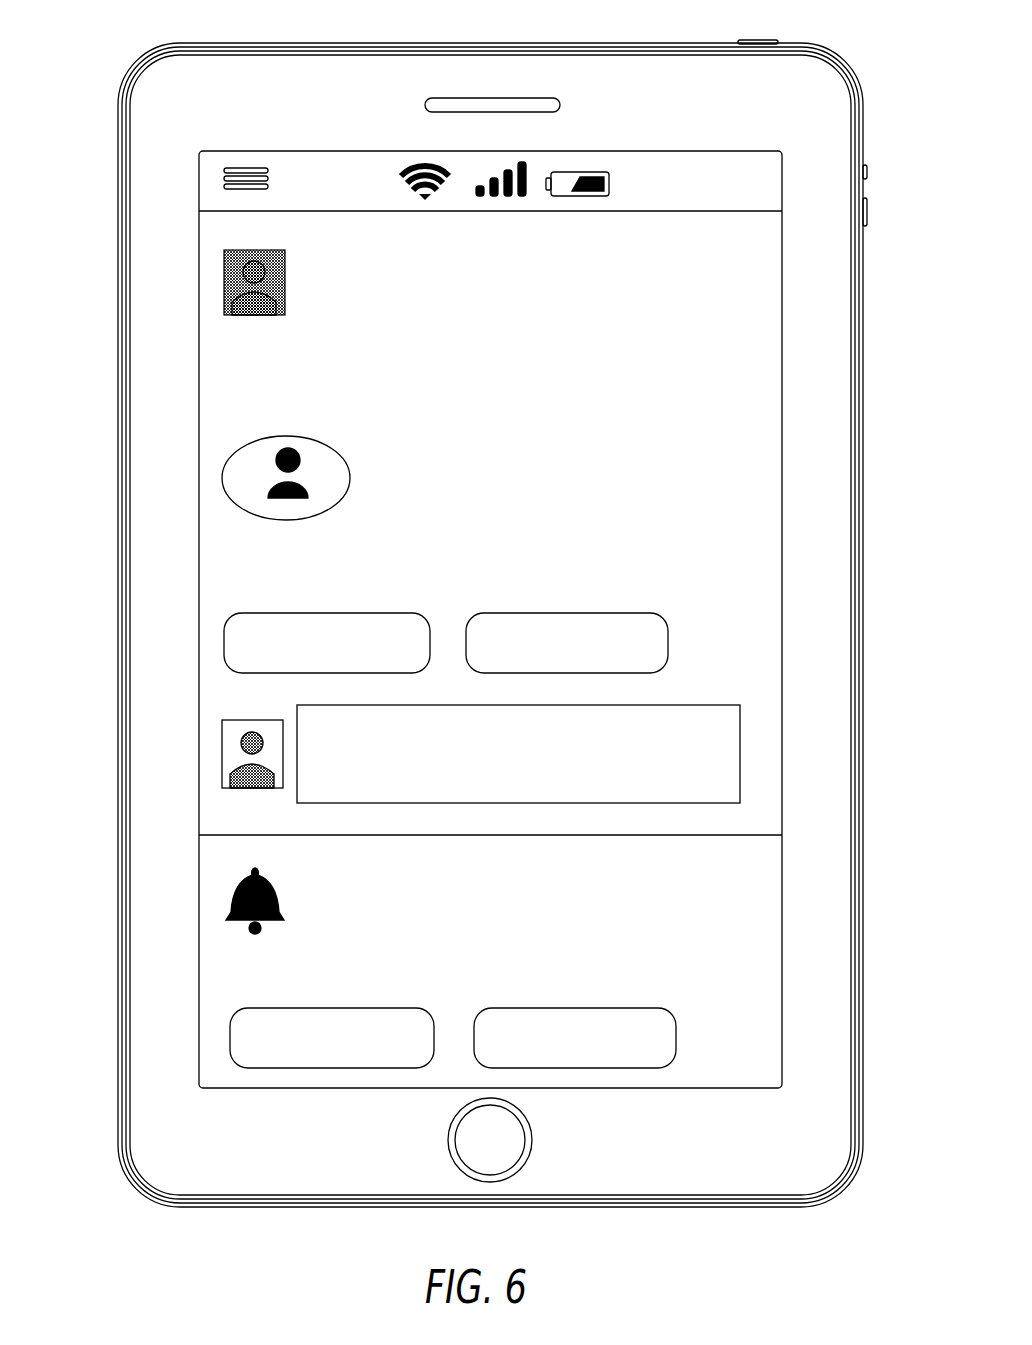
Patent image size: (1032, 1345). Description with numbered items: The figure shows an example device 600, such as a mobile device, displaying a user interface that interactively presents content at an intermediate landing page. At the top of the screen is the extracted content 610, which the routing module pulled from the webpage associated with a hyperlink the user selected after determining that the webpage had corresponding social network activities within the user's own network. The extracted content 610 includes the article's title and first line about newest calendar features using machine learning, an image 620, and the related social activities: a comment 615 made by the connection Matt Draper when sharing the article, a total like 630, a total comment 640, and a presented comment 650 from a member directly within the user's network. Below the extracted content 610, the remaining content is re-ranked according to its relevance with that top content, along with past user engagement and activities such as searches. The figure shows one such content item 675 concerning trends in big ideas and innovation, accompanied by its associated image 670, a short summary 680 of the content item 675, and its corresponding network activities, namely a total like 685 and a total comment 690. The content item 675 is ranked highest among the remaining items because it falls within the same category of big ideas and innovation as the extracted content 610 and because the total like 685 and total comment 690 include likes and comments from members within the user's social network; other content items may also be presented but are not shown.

The device 600 is at (86, 82).
The extracted content 610 is at (194, 251).
The comment 615 is at (582, 329).
The image 620 is at (218, 488).
The total like 630 is at (218, 644).
The total comment 640 is at (686, 645).
The presented comment 650 is at (217, 749).
The image 670 is at (219, 904).
The content item 675 is at (726, 875).
The short summary 680 is at (755, 930).
The total like 685 is at (221, 1045).
The total comment 690 is at (691, 1040).